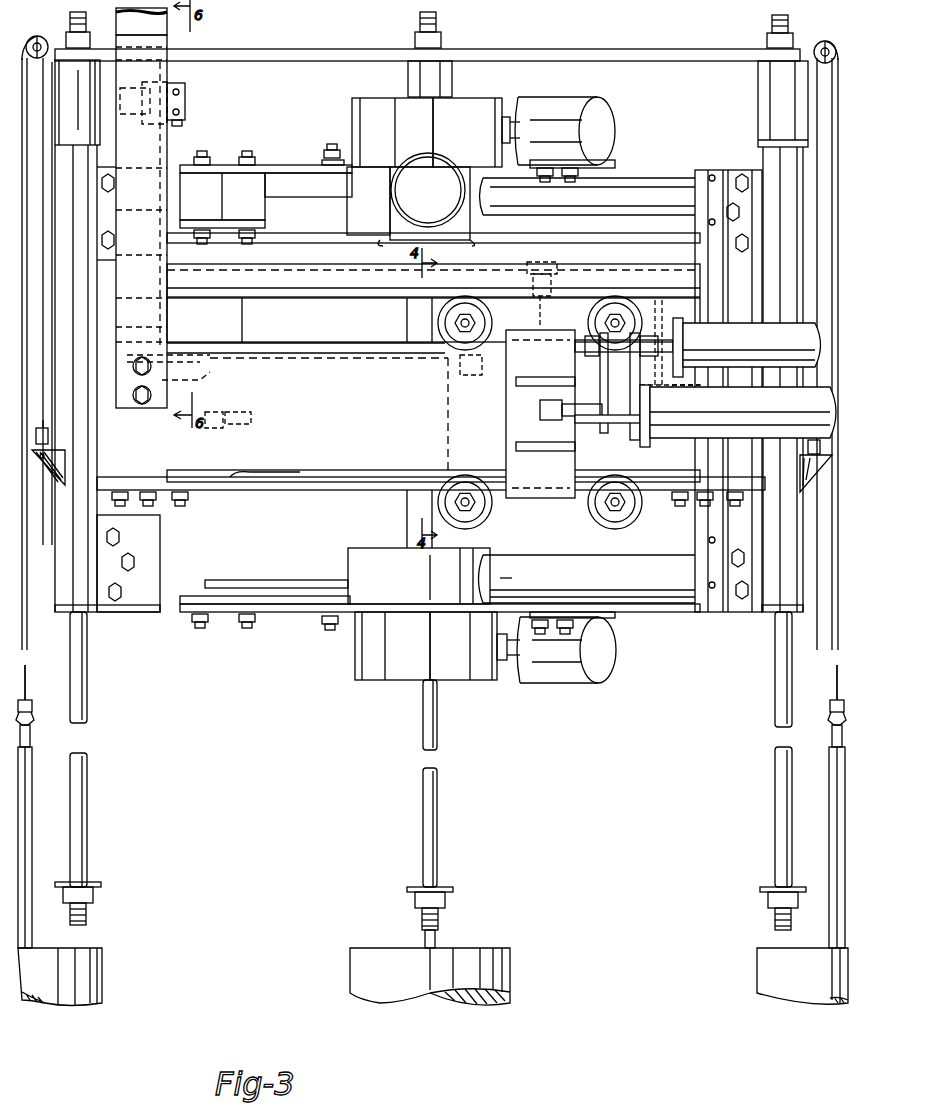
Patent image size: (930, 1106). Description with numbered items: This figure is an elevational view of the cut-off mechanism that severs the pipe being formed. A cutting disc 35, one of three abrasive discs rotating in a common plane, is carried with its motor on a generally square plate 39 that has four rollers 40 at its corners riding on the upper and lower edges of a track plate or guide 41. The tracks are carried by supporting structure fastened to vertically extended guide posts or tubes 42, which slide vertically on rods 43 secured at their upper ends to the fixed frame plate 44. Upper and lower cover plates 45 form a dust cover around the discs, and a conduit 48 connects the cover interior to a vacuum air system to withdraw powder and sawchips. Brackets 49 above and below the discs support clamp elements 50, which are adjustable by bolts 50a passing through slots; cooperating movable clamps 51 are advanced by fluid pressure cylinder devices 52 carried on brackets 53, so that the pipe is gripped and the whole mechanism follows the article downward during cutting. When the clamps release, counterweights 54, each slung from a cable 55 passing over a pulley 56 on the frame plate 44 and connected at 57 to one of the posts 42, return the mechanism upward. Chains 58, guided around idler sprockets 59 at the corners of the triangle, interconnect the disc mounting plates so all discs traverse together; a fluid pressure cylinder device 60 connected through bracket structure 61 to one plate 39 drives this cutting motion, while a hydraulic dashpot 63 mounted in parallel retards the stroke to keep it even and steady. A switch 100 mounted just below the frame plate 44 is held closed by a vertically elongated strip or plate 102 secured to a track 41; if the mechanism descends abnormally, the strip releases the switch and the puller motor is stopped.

The cutting disc 35 is at (575, 275).
The generally square plate 39 is at (447, 448).
The rollers 40 is at (492, 318).
The track plate or guide 41 is at (306, 518).
The guide posts or tubes 42 is at (453, 84).
The rods 43 is at (440, 22).
The frame plate 44 is at (362, 48).
The cover plates 45 is at (433, 287).
The conduit 48 is at (395, 175).
The brackets 49 is at (262, 182).
The clamp elements 50 is at (390, 105).
The bolts 50a is at (330, 152).
The movable clamps 51 is at (482, 100).
The fluid pressure cylinder devices 52 is at (612, 116).
The brackets 53 is at (633, 172).
The counterweights 54 is at (104, 980).
The cable 55 is at (45, 645).
The pulley 56 is at (60, 28).
The cable connection 57 is at (40, 480).
The chains 58 is at (368, 365).
The idler sprockets 59 is at (210, 372).
The fluid pressure cylinder device 60 is at (747, 347).
The bracket structure 61 is at (568, 476).
The hydraulic dashpot 63 is at (705, 416).
The switch 100 is at (185, 96).
The vertically elongated strip or plate 102 is at (150, 410).